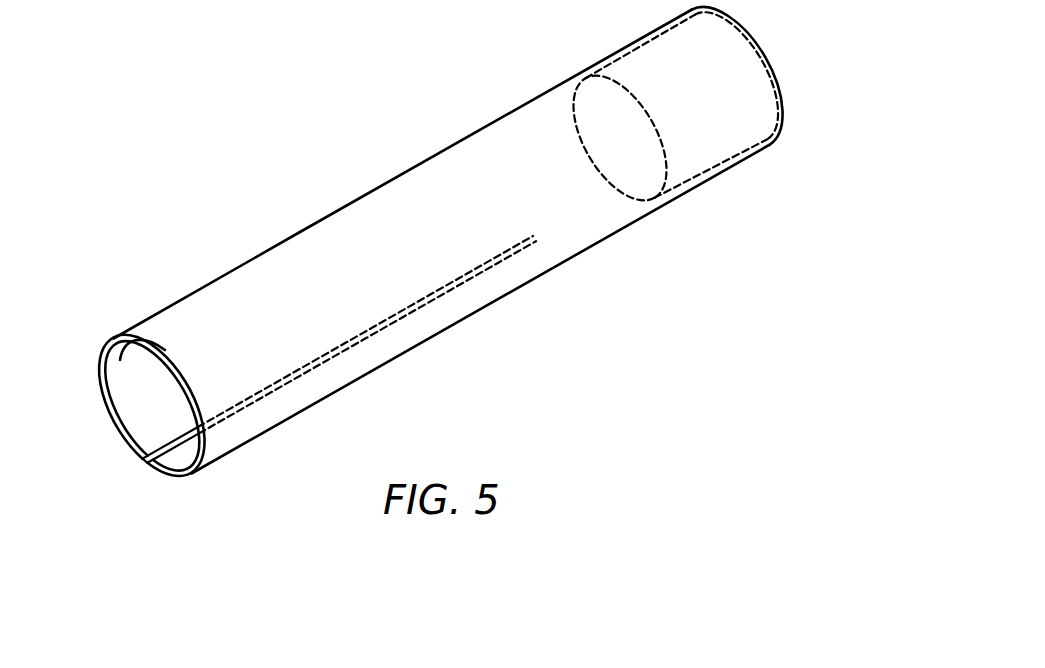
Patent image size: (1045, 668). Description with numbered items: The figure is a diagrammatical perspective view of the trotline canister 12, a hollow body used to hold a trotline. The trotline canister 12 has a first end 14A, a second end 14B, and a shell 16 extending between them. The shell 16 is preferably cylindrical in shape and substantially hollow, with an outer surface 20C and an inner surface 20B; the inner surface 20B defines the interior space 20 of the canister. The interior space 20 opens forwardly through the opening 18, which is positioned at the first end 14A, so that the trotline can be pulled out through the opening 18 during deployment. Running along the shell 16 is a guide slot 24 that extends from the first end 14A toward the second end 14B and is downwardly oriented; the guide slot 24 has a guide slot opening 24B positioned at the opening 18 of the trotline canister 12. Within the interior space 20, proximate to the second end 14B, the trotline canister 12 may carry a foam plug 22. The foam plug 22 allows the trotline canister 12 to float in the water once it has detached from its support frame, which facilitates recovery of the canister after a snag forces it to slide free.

The trotline canister 12 is at (222, 283).
The first end 14A is at (120, 397).
The second end 14B is at (746, 32).
The shell 16 is at (358, 252).
The opening 18 is at (100, 383).
The interior space 20 is at (148, 390).
The inner surface 20B is at (186, 435).
The outer surface 20C is at (176, 326).
The foam plug 22 is at (710, 123).
The guide slot 24 is at (160, 467).
The guide slot opening 24B is at (153, 471).